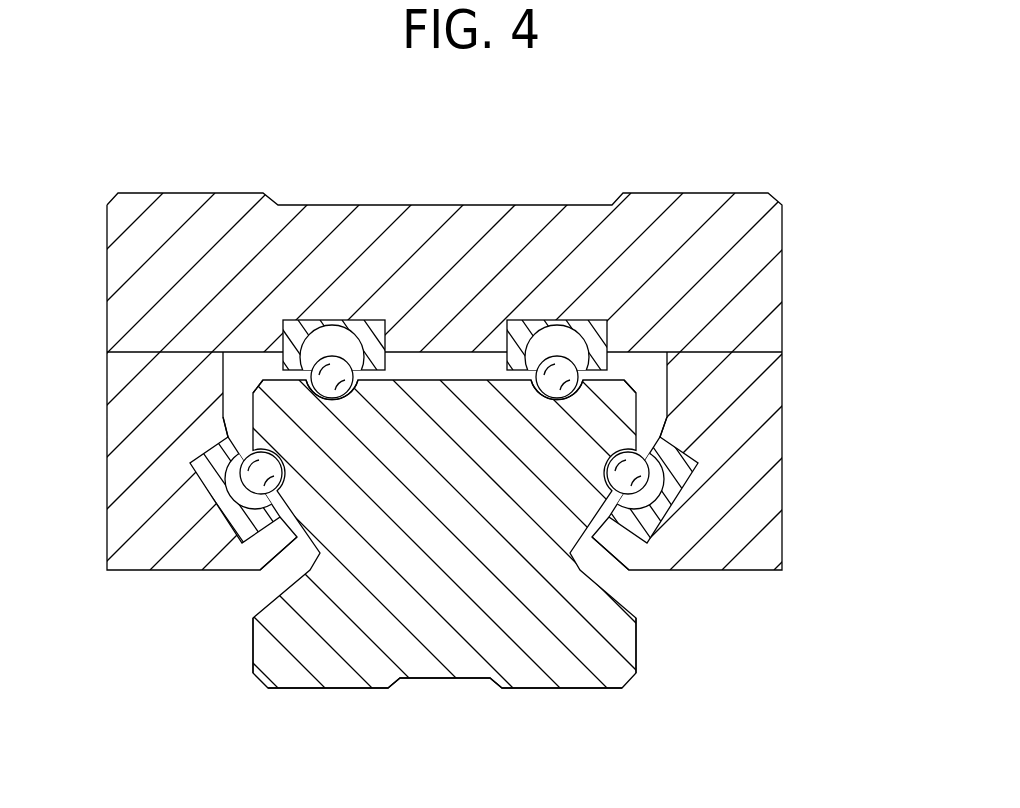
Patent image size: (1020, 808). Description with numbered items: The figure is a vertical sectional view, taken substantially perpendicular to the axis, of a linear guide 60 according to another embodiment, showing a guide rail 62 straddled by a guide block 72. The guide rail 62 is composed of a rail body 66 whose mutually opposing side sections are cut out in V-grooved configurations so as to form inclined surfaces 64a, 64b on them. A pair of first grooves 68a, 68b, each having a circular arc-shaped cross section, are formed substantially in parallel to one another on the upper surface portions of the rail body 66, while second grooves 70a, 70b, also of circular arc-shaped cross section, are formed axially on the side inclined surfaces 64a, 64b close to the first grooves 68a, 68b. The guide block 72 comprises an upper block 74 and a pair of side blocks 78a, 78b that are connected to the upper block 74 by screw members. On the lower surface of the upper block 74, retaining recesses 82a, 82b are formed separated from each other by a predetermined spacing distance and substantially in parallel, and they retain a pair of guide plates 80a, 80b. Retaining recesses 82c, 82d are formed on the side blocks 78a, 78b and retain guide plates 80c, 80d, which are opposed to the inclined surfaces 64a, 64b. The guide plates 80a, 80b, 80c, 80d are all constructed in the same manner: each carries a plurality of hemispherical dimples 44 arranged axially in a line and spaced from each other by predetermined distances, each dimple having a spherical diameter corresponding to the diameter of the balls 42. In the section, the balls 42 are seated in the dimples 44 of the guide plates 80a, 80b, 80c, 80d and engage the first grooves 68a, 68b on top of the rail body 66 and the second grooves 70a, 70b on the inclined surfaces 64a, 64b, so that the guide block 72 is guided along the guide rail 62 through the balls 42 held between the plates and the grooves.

The balls 42 is at (250, 405).
The hemispherical dimples 44 is at (341, 354).
The linear guide 60 is at (677, 71).
The guide rail 62 is at (468, 586).
The inclined surface 64a is at (272, 600).
The inclined surface 64b is at (615, 600).
The rail body 66 is at (457, 617).
The first groove 68a is at (333, 400).
The first groove 68b is at (555, 400).
The second groove 70a is at (270, 572).
The second groove 70b is at (630, 572).
The guide block 72 is at (510, 376).
The upper block 74 is at (227, 238).
The side block 78a is at (168, 370).
The side block 78b is at (722, 370).
The guide plate 80a is at (337, 267).
The guide plate 80b is at (561, 269).
The guide plate 80c is at (195, 502).
The guide plate 80d is at (692, 501).
The retaining recess 82a is at (333, 332).
The retaining recess 82b is at (563, 342).
The retaining recess 82c is at (205, 470).
The retaining recess 82d is at (690, 470).